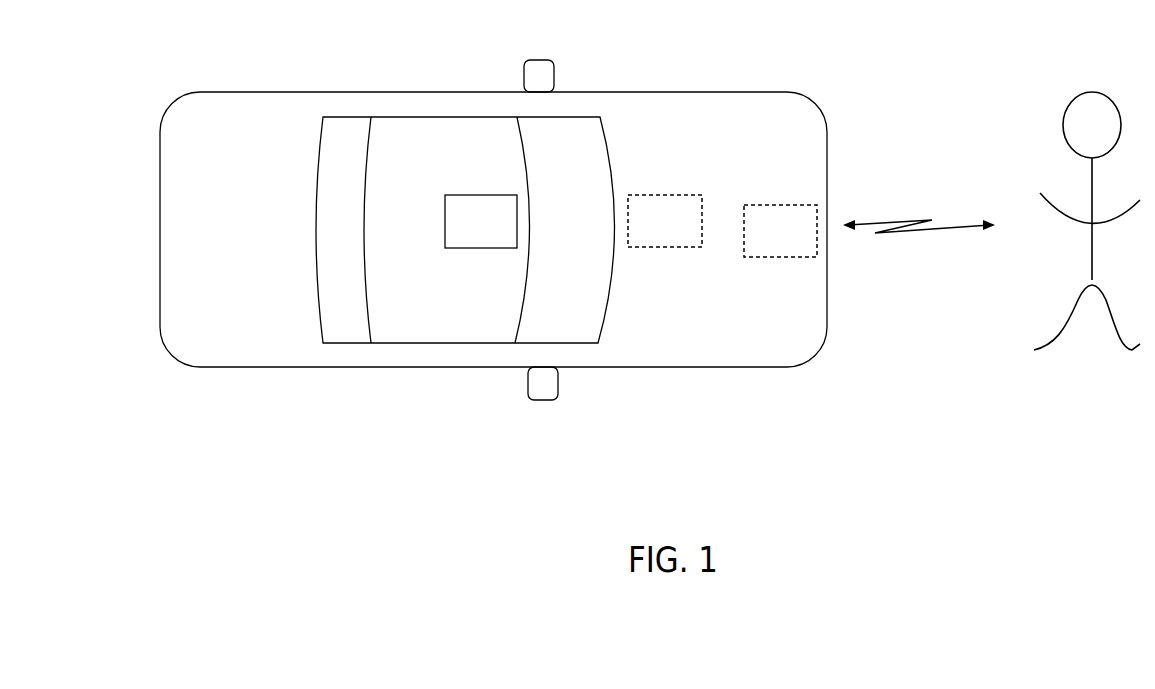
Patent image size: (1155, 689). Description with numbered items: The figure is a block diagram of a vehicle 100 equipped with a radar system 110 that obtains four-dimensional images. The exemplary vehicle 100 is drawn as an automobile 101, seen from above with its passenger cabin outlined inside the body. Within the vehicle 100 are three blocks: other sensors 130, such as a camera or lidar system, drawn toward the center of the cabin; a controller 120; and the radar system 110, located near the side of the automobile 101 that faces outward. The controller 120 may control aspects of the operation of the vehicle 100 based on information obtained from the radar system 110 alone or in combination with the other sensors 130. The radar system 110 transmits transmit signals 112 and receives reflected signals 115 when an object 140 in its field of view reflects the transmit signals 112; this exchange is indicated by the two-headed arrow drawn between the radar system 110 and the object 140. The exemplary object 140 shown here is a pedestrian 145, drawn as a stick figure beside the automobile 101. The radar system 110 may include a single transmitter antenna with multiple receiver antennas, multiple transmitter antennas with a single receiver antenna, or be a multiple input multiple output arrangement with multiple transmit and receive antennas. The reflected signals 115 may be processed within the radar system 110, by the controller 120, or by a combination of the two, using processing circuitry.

The vehicle 100 is at (493, 254).
The automobile 101 is at (238, 368).
The radar system 110 is at (758, 246).
The transmit signals 112 is at (919, 207).
The reflected signals 115 is at (919, 207).
The controller 120 is at (643, 237).
The other sensors 130 is at (459, 237).
The object 140 is at (1065, 184).
The pedestrian 145 is at (1058, 71).